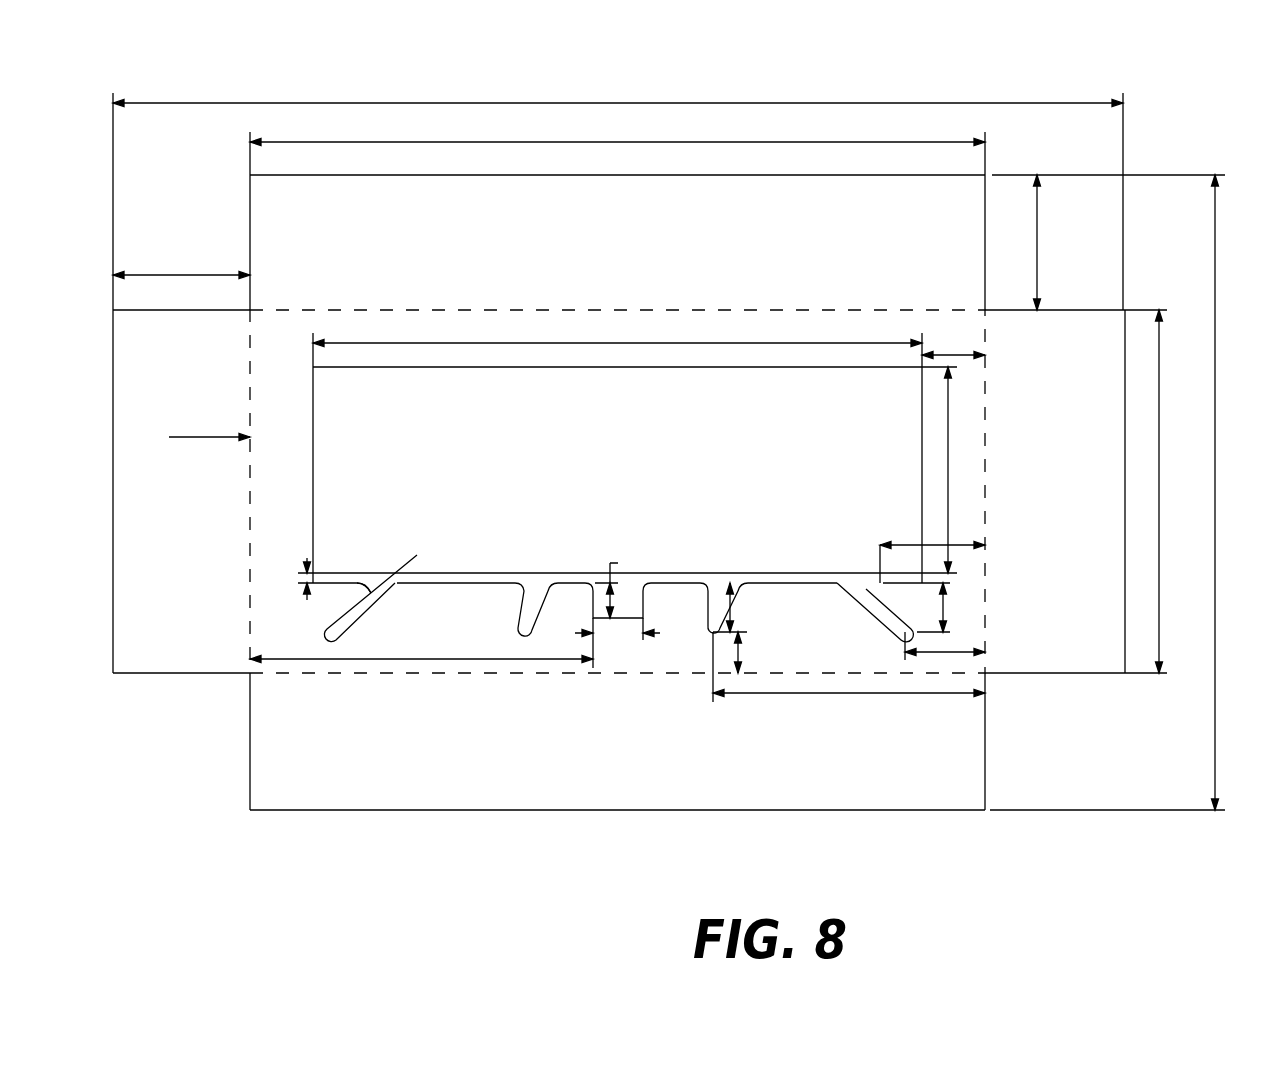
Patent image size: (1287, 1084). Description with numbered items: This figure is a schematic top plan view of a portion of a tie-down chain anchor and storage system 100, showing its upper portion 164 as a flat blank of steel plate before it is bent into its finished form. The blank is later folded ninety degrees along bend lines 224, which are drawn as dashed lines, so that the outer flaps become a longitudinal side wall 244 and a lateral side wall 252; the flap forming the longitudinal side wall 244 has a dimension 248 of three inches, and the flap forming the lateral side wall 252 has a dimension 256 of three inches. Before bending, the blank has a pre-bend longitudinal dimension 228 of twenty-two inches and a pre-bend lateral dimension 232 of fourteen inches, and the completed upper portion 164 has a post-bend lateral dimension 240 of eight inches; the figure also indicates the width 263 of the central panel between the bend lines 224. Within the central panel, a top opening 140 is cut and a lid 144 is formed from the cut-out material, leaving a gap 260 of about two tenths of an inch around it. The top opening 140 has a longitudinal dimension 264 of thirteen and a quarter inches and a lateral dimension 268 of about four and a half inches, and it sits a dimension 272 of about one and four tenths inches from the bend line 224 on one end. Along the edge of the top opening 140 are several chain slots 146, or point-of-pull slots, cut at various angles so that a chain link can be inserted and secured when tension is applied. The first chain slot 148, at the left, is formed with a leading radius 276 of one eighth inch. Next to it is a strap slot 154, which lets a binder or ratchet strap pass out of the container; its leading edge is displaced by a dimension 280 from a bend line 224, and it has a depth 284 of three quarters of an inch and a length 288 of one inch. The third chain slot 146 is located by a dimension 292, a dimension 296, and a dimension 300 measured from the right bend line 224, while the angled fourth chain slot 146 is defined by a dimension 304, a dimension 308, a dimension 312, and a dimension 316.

The tie-down chain anchor and storage system 100 is at (617, 426).
The upper portion 164 is at (680, 222).
The top opening 140 is at (313, 422).
The lid 144 is at (627, 494).
The chain slots 146 is at (517, 605).
The first chain slot 148 is at (375, 600).
The strap slot 154 is at (622, 618).
The bend lines 224 is at (818, 308).
The pre-bend longitudinal dimension 228 is at (352, 103).
The pre-bend lateral dimension 232 is at (1215, 742).
The post-bend lateral dimension 240 is at (1215, 362).
The longitudinal side wall 244 is at (505, 225).
The dimension of longitudinal side wall flap 248 is at (1037, 243).
The lateral side wall 252 is at (188, 666).
The dimension of lateral side wall flap 256 is at (185, 275).
The gap 260 is at (303, 597).
The body width 263 is at (727, 140).
The longitudinal dimension of top opening 264 is at (628, 340).
The lateral dimension of top opening 268 is at (948, 522).
The dimension from top opening to bend line 272 is at (953, 355).
The leading radius 276 is at (365, 588).
The dimension from bend line to strap slot leading edge 280 is at (322, 659).
The depth of strap slot 284 is at (612, 563).
The length of strap slot 288 is at (657, 632).
The third chain slot dimension 292 is at (730, 608).
The third chain slot dimension 296 is at (738, 652).
The dimension from right bend line to third chain slot 300 is at (884, 584).
The fourth chain slot dimension 304 is at (858, 612).
The fourth chain slot dimension 308 is at (943, 608).
The fourth chain slot dimension 312 is at (940, 660).
The fourth chain slot dimension 316 is at (907, 545).